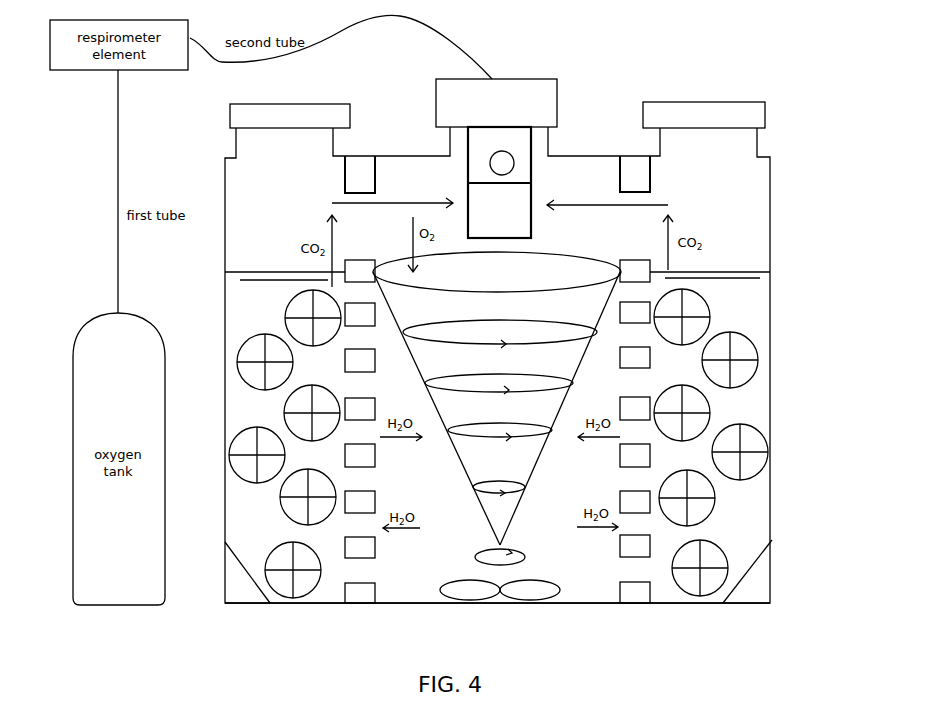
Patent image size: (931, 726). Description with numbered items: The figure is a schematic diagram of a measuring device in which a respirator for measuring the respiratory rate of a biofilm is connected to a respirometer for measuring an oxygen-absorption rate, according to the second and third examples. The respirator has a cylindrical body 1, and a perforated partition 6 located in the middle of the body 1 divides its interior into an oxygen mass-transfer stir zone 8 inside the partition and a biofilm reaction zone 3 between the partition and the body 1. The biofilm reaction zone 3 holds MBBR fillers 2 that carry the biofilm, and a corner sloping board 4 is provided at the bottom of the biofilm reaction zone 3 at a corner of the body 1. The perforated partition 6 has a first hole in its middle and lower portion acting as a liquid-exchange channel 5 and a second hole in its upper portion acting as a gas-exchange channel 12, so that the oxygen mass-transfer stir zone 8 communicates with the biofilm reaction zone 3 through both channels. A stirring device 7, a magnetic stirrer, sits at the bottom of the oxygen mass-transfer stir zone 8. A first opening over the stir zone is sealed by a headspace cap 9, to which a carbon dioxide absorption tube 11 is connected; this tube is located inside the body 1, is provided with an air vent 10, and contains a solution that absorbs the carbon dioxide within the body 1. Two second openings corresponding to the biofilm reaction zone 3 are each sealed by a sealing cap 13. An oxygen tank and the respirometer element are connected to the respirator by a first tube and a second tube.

The body 1 is at (772, 157).
The MBBR fillers 2 is at (740, 350).
The biofilm reaction zone 3 is at (260, 313).
The corner sloping board 4 is at (757, 585).
The liquid-exchange channel 5 is at (362, 573).
The perforated partition 6 is at (363, 593).
The stirring device 7 is at (530, 595).
The oxygen mass-transfer stir zone 8 is at (542, 542).
The headspace cap 9 is at (517, 97).
The air vent 10 is at (513, 167).
The carbon dioxide absorption tube 11 is at (517, 187).
The gas-exchange channel 12 is at (358, 195).
The sealing cap 13 is at (303, 118).